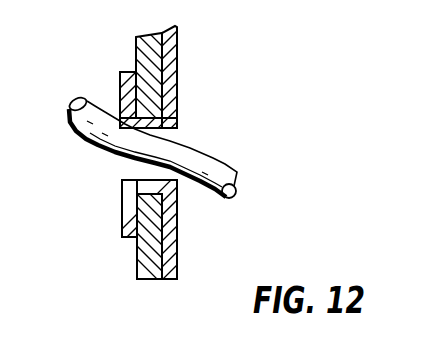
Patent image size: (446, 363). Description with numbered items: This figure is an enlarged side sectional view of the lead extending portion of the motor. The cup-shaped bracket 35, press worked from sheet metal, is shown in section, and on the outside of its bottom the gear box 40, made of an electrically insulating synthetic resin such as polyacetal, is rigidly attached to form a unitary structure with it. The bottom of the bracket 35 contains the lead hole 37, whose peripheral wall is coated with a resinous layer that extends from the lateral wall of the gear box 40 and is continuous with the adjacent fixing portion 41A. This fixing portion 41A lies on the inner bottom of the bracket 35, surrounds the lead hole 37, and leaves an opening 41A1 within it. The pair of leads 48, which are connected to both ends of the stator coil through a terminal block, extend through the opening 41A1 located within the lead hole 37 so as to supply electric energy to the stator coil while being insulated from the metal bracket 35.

The cup-shaped bracket 35 is at (147, 60).
The gear box 40 is at (173, 77).
The lead hole 37 is at (178, 116).
The leads 48 is at (211, 172).
The fixing portion 41A is at (121, 199).
The opening 41A1 is at (148, 180).